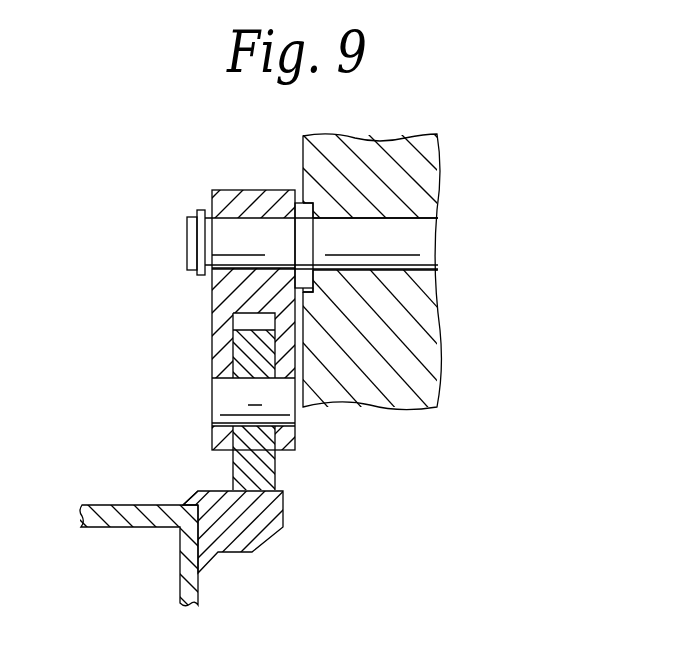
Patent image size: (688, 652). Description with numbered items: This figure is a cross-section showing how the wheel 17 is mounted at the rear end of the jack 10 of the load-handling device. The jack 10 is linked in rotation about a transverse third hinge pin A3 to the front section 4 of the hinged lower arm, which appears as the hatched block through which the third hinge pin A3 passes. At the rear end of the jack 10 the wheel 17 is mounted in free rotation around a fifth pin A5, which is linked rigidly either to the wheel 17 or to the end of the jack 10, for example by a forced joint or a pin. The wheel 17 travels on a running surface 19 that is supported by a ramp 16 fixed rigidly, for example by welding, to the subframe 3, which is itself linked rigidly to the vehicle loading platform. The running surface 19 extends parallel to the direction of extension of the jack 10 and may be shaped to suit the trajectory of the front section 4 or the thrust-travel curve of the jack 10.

The front section 4 is at (312, 158).
The third hinge pin A3 is at (423, 250).
The jack 10 is at (218, 313).
The fifth pin A5 is at (218, 402).
The wheel 17 is at (258, 471).
The ramp 16 is at (264, 532).
The running surface 19 is at (213, 490).
The subframe 3 is at (103, 508).